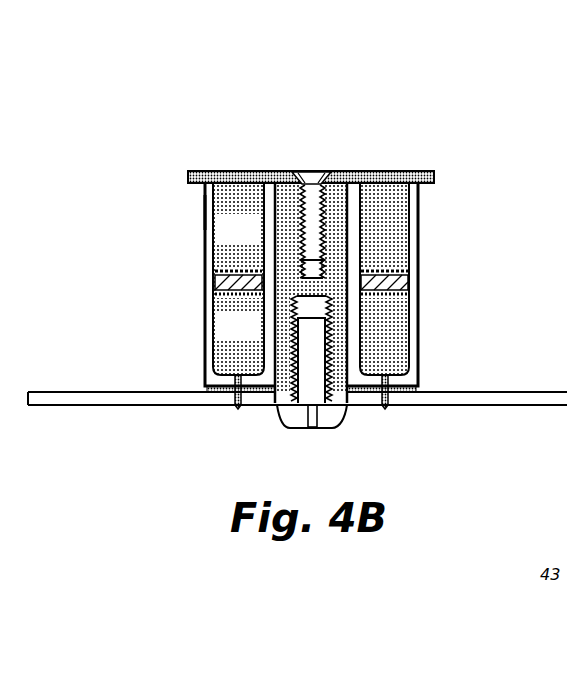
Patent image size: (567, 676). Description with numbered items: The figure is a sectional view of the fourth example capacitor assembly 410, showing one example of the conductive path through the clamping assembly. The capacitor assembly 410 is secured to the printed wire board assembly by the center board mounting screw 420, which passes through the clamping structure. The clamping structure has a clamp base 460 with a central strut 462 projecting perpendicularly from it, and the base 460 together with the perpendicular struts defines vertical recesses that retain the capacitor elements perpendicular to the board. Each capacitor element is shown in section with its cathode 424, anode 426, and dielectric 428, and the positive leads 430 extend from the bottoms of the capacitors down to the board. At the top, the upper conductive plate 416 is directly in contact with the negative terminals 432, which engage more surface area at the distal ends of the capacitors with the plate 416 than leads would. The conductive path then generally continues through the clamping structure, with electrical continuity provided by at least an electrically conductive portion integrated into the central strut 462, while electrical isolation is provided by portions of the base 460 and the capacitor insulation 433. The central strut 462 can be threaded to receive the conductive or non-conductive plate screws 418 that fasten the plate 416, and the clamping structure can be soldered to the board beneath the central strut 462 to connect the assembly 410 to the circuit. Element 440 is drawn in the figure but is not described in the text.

The capacitor assembly 410 is at (438, 94).
The upper conductive plate 416 is at (433, 172).
The conductive plate screws 418 is at (310, 168).
The board mounting screw 420 is at (330, 428).
The cathode 424 is at (260, 241).
The anode 426 is at (260, 338).
The dielectric 428 is at (215, 282).
The positive leads 430 is at (238, 410).
The negative terminals 432 is at (236, 171).
The capacitor insulation 433 is at (203, 205).
The threaded stud 440 is at (275, 406).
The clamp base 460 is at (418, 388).
The central strut 462 is at (290, 348).